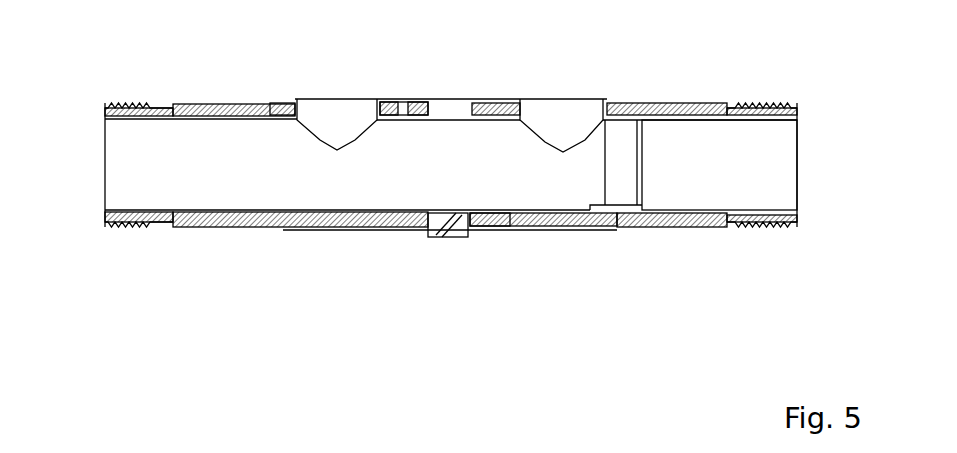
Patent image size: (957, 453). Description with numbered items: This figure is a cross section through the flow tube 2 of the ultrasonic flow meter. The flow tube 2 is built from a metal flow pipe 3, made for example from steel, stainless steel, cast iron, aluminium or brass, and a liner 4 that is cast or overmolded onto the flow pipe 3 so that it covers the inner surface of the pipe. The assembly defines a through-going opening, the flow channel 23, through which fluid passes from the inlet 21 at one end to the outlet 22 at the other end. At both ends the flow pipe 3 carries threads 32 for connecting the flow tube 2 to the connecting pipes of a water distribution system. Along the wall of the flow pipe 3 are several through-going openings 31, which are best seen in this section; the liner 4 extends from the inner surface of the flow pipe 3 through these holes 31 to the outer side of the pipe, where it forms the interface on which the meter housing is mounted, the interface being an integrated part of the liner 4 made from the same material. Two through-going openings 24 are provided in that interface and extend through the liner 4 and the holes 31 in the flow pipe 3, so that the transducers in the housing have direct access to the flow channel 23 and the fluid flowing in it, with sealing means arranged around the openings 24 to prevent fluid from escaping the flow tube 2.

The flow tube 2 is at (677, 82).
The flow pipe 3 is at (215, 101).
The liner 4 is at (313, 113).
The inlet 21 is at (100, 177).
The outlet 22 is at (810, 167).
The flow channel 23 is at (523, 177).
The through-going openings 24 is at (342, 118).
The through-going openings 31 is at (293, 101).
The threads 32 is at (135, 222).